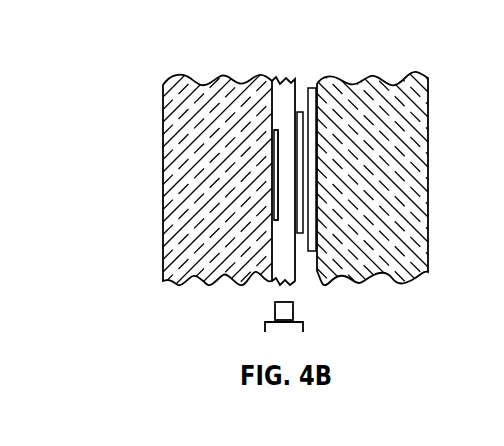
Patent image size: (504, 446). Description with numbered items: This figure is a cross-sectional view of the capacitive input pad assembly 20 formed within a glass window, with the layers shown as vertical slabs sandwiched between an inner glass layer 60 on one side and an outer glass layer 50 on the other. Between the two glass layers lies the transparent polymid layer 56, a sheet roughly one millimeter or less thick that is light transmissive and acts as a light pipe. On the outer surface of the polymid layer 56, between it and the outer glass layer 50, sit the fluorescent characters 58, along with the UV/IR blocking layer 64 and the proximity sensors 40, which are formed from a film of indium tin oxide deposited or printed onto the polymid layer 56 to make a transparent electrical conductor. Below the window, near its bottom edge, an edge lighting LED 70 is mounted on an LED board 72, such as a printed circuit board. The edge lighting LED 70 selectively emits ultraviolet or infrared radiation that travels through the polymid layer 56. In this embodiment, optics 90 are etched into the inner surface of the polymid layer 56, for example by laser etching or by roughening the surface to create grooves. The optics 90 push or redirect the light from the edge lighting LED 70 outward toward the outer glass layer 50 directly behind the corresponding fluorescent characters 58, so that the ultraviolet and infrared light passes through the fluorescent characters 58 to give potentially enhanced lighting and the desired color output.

The input pad assembly 20 is at (147, 56).
The proximity sensors 40 is at (303, 203).
The outer glass layer 50 is at (415, 118).
The polymid layer 56 is at (283, 80).
The fluorescent characters 58 is at (295, 167).
The inner glass layer 60 is at (180, 125).
The UV/IR blocking layer 64 is at (312, 87).
The edge lighting LED 70 is at (293, 307).
The LED board 72 is at (268, 322).
The optics 90 is at (275, 192).